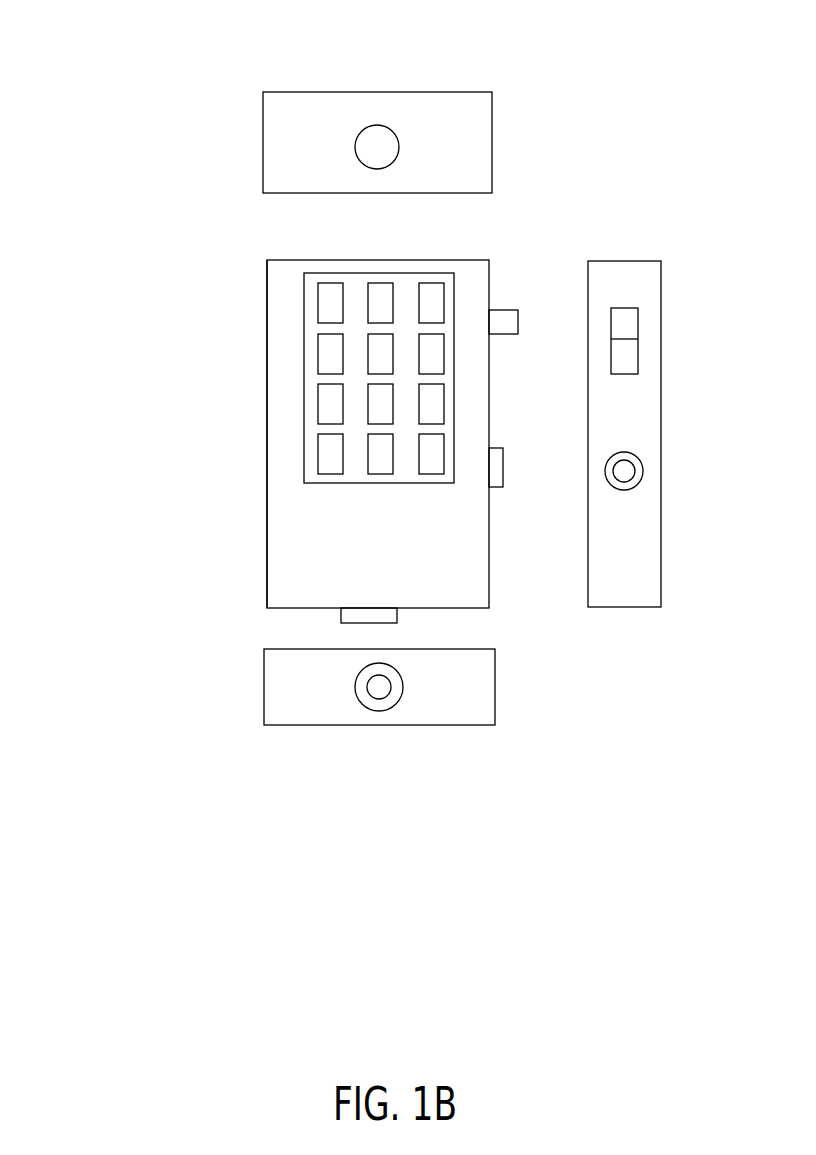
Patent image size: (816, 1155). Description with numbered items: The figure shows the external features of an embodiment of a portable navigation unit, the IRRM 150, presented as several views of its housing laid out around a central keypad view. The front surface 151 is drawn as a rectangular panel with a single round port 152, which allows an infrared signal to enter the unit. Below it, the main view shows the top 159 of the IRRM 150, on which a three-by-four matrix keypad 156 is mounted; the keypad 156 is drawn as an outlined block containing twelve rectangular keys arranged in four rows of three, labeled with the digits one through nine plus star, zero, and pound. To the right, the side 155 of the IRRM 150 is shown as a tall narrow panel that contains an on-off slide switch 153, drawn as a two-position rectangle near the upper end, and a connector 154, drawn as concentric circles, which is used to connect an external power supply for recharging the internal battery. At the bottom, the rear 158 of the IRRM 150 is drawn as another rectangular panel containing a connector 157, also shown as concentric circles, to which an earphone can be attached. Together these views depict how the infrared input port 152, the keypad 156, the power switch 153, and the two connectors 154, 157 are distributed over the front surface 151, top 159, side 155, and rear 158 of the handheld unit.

The IRRM 150 is at (183, 318).
The front surface 151 is at (371, 105).
The port 152 is at (437, 93).
The on-off slide switch 153 is at (688, 313).
The connector 154 is at (685, 485).
The side 155 is at (677, 439).
The 3×4 matrix keypad 156 is at (431, 418).
The connector 157 is at (420, 746).
The rear 158 is at (375, 739).
The top 159 is at (204, 434).